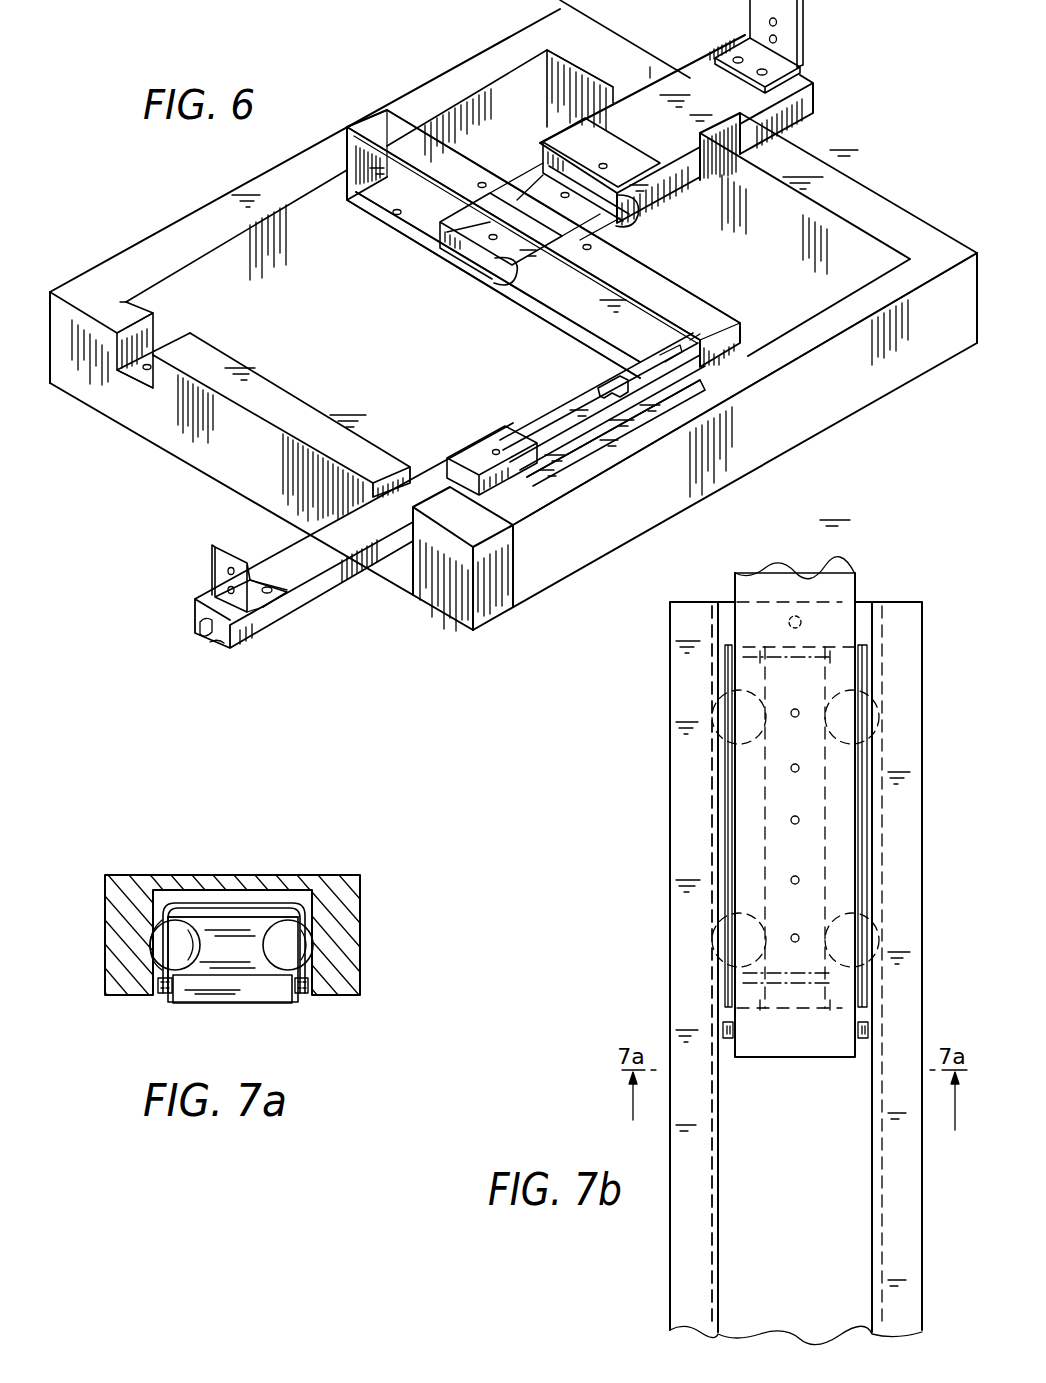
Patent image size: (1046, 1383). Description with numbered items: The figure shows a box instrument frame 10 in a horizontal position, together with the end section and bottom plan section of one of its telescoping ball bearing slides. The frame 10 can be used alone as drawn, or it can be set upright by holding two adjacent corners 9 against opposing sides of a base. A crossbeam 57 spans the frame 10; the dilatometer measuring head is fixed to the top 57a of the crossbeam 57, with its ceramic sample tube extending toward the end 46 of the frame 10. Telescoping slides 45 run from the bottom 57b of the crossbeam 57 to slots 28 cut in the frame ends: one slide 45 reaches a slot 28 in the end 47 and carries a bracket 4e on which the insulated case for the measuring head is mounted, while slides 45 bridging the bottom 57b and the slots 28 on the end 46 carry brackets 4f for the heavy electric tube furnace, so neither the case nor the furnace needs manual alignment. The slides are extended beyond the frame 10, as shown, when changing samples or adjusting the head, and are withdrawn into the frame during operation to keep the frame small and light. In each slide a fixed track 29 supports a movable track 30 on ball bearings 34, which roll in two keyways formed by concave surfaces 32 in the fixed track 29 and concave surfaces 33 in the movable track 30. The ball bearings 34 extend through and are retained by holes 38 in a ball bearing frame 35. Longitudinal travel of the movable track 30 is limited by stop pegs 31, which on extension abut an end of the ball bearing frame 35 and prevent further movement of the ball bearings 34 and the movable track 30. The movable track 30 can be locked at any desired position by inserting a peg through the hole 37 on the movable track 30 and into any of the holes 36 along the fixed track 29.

In FIG. 6, the corners 9 is at (540, 22).
In FIG. 6, the frame 10 is at (712, 502).
In FIG. 6, the slot 28 is at (190, 315).
In FIG. 6, the fixed track 29 is at (548, 185).
In FIG. 7A, the fixed track 29 is at (240, 927).
In FIG. 6, the movable track 30 is at (805, 94).
In FIG. 7B, the movable track 30 is at (685, 768).
In FIG. 7A, the movable track 30 is at (322, 886).
In FIG. 7B, the stop pegs 31 is at (733, 1040).
In FIG. 7A, the stop pegs 31 is at (310, 998).
In FIG. 6, the concave surfaces 32 is at (672, 372).
In FIG. 7B, the concave surfaces 32 is at (752, 645).
In FIG. 7A, the concave surfaces 32 is at (207, 930).
In FIG. 7B, the concave surfaces 33 is at (710, 788).
In FIG. 7A, the concave surfaces 33 is at (150, 953).
In FIG. 7B, the ball bearings 34 is at (877, 718).
In FIG. 7A, the ball bearings 34 is at (283, 957).
In FIG. 7B, the ball bearing frame 35 is at (867, 803).
In FIG. 7A, the ball bearing frame 35 is at (310, 912).
In FIG. 6, the holes 36 is at (615, 392).
In FIG. 7B, the holes 36 is at (800, 880).
In FIG. 6, the hole 37 is at (484, 456).
In FIG. 7B, the hole 37 is at (798, 628).
In FIG. 7B, the holes 38 is at (863, 690).
In FIG. 7A, the holes 38 is at (152, 918).
In FIG. 6, the telescoping slides 45 is at (627, 220).
In FIG. 6, the end 46 is at (222, 470).
In FIG. 6, the end 47 is at (638, 60).
In FIG. 6, the crossbeam 57 is at (345, 162).
In FIG. 6, the top of crossbeam 57a is at (400, 125).
In FIG. 6, the bottom of crossbeam 57b is at (410, 218).
In FIG. 6, the bracket 4e is at (790, 42).
In FIG. 6, the brackets 4f is at (214, 573).